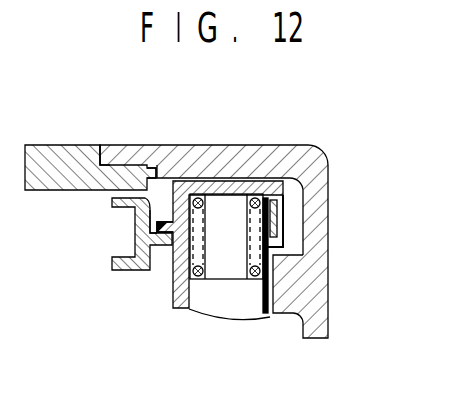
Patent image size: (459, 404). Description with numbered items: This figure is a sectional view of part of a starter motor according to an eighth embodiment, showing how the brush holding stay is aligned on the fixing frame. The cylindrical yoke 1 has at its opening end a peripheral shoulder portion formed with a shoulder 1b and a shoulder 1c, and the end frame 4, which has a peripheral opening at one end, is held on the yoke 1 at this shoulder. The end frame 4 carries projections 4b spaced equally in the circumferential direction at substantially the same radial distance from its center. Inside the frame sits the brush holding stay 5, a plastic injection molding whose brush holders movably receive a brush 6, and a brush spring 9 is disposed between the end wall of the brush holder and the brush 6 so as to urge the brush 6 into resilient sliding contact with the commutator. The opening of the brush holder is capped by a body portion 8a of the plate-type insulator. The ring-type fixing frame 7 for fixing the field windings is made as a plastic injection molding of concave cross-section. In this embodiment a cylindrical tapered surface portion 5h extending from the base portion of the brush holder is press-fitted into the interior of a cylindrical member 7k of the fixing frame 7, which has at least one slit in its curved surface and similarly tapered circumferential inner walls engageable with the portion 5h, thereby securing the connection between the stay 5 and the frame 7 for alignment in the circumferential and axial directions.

The cylindrical yoke 1 is at (47, 160).
The peripheral shoulder portion 1c is at (100, 152).
The peripheral shoulder portion 1b is at (161, 168).
The end frame 4 is at (268, 160).
The projection 4b is at (285, 277).
The brush holding stay 5 is at (178, 188).
The cylindrical tapered surface portion 5h is at (160, 244).
The brush 6 is at (235, 312).
The fixing frame 7 is at (140, 199).
The cylindrical member 7k is at (140, 228).
The body portion 8a is at (268, 218).
The brush spring 9 is at (200, 199).